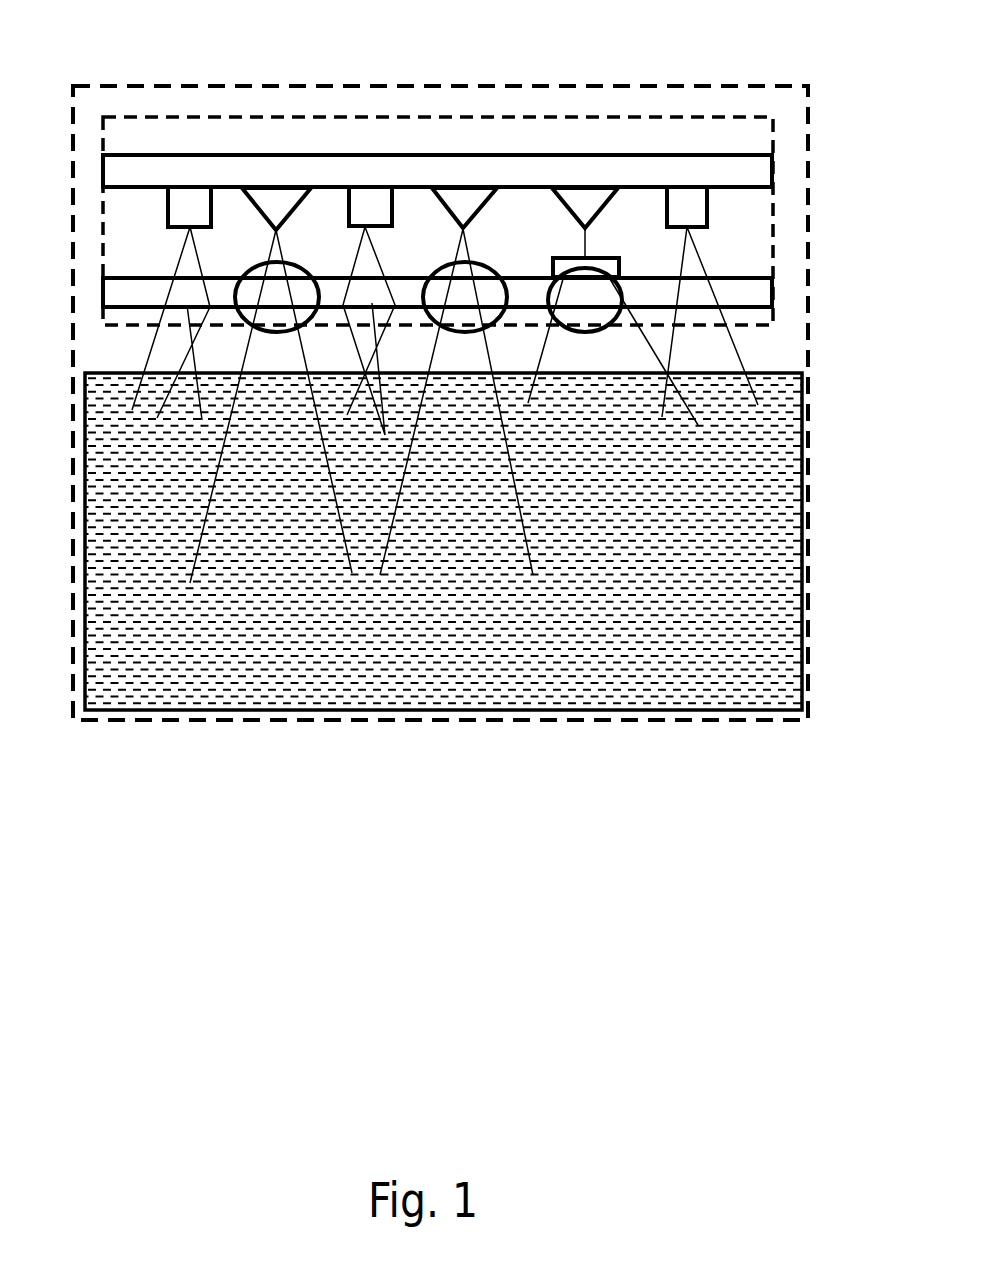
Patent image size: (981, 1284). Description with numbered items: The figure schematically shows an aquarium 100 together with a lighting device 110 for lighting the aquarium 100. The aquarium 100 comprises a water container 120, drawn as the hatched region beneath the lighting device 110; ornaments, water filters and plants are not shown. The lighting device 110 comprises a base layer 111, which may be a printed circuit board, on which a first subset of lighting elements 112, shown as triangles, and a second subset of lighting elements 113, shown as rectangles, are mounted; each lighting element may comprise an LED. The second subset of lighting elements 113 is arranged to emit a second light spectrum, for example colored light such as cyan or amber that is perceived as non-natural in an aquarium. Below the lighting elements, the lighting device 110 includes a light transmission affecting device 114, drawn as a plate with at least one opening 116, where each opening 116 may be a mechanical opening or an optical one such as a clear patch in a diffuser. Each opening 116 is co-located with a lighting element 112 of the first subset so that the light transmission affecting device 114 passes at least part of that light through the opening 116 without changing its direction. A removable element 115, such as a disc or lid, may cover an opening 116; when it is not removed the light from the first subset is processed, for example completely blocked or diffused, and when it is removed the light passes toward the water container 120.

The aquarium 100 is at (565, 85).
The lighting device 110 is at (113, 118).
The base layer 111 is at (308, 152).
The first subset of lighting elements 112 is at (472, 185).
The second subset of lighting elements 113 is at (717, 203).
The light transmission affecting device 114 is at (735, 302).
The removable element 115 is at (617, 273).
The opening 116 is at (270, 332).
The water container 120 is at (585, 690).